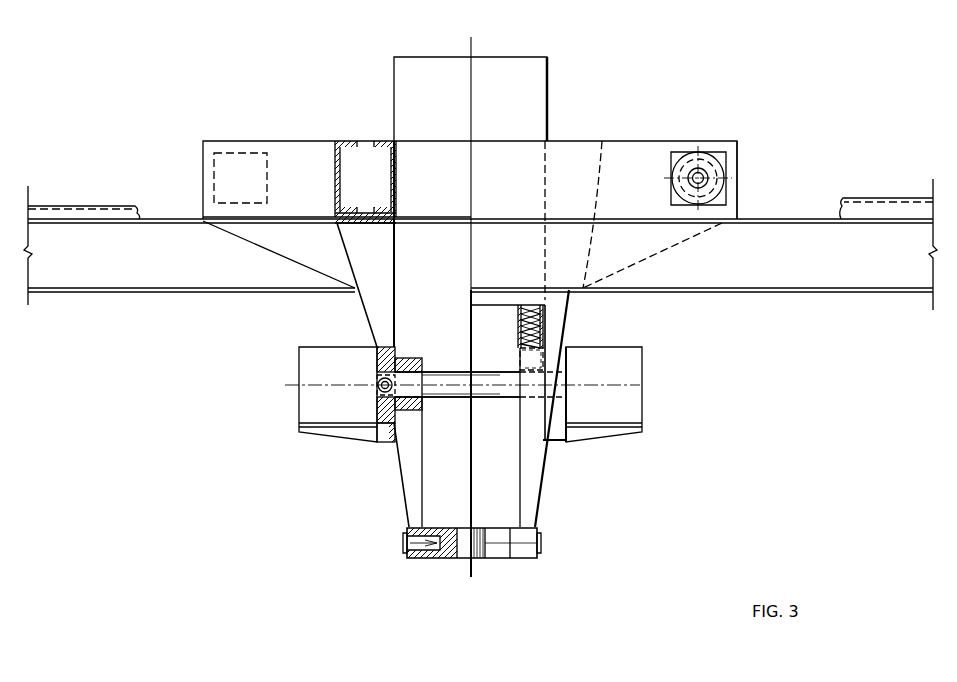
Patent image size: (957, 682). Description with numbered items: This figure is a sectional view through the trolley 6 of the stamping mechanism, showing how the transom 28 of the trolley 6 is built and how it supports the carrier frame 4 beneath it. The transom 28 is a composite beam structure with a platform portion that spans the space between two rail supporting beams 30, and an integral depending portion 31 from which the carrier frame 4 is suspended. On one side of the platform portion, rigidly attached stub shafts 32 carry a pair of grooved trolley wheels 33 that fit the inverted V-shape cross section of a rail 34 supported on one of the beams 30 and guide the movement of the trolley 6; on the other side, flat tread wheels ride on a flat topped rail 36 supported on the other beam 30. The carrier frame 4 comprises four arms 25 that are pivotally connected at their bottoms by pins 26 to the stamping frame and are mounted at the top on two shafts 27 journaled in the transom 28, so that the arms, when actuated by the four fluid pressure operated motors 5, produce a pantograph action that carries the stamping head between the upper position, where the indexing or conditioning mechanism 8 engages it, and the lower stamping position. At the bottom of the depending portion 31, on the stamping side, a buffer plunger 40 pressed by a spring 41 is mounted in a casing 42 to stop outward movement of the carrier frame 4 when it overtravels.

The carrier frame 4 is at (539, 517).
The frame actuating fluid pressure operated motor 5 is at (308, 373).
The trolley 6 is at (739, 144).
The indexing or conditioning mechanism 8 is at (548, 83).
The arm 25 is at (405, 486).
The pin 26 is at (404, 540).
The shaft 27 is at (460, 376).
The transom 28 is at (609, 148).
The rail supporting beam 30 is at (175, 282).
The depending portion 31 is at (372, 308).
The stub shaft 32 is at (710, 170).
The grooved trolley wheel 33 is at (715, 189).
The rail 34 is at (873, 203).
The flat topped rail 36 is at (67, 210).
The buffer plunger 40 is at (540, 367).
The spring 41 is at (542, 343).
The casing 42 is at (543, 316).